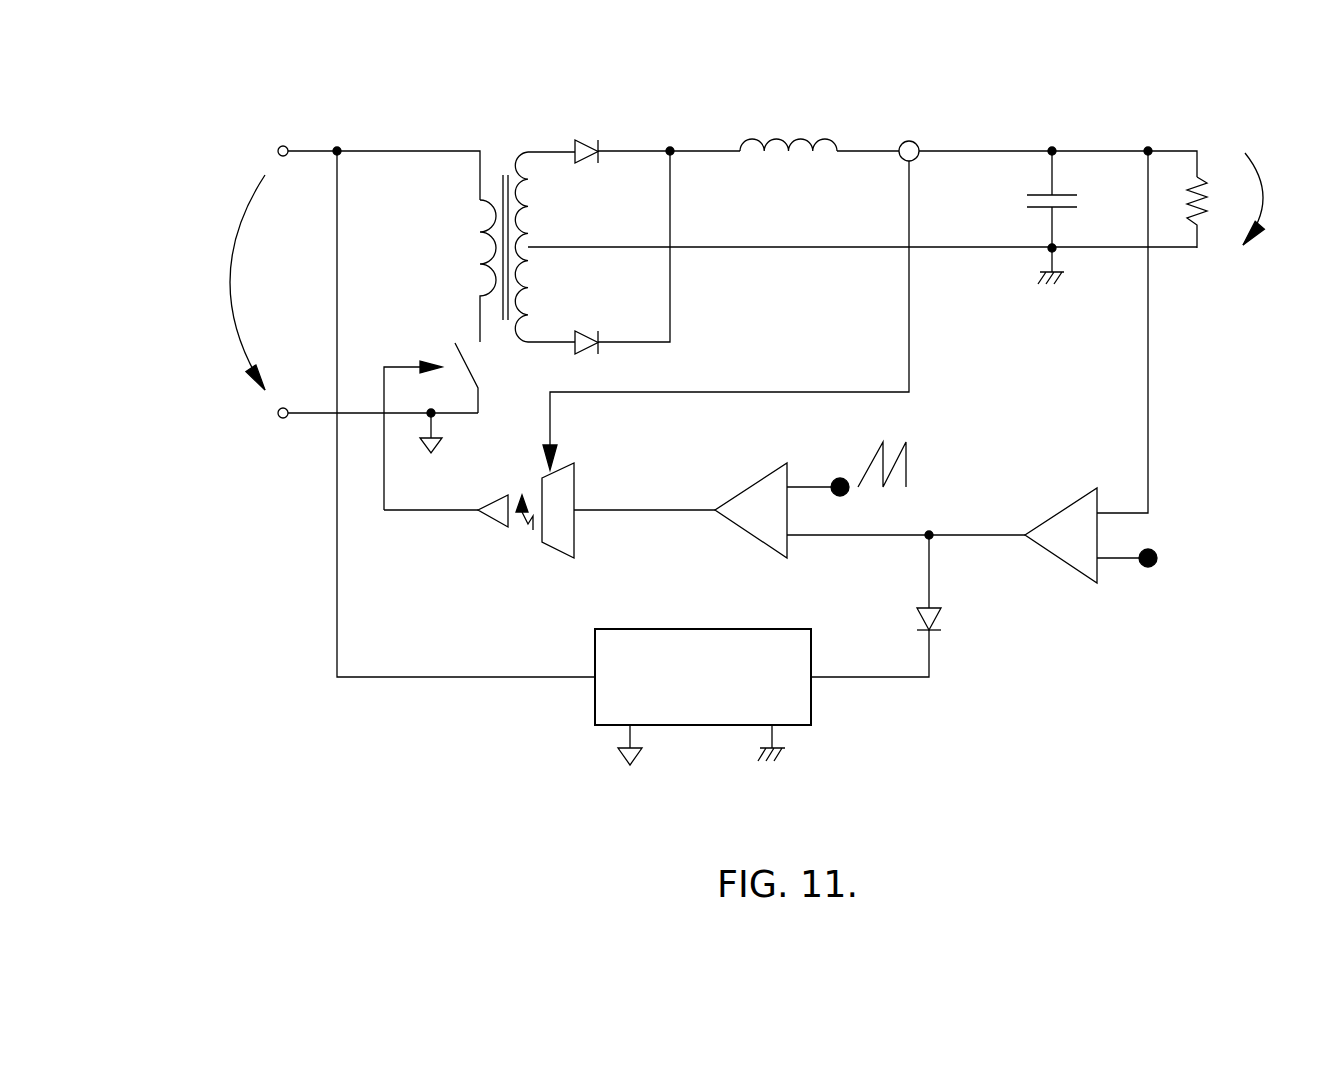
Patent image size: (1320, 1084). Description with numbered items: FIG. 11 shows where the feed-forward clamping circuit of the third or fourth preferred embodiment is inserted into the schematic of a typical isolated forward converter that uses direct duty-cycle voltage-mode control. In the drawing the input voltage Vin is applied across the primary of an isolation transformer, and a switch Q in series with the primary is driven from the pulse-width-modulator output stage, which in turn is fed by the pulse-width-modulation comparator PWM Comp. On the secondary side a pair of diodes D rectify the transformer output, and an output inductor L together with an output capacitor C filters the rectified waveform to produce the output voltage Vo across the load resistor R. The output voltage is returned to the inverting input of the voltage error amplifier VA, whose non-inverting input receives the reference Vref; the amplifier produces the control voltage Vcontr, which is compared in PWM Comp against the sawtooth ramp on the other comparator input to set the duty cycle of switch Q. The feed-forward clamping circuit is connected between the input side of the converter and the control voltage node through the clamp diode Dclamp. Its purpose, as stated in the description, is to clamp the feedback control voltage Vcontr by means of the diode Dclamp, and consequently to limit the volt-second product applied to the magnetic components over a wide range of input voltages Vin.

The input voltage Vin is at (221, 282).
The switching transistor Q is at (448, 426).
The rectifier diode D is at (586, 226).
The output inductor L is at (788, 127).
The output capacitor C is at (1056, 199).
The load resistor R is at (1211, 212).
The output voltage Vo is at (1273, 199).
The PWM comparator PWM Comp is at (760, 500).
The control voltage Vcontr is at (906, 552).
The voltage error amplifier VA is at (1057, 531).
The reference voltage Vref is at (1159, 560).
The diode Dclamp is at (929, 606).